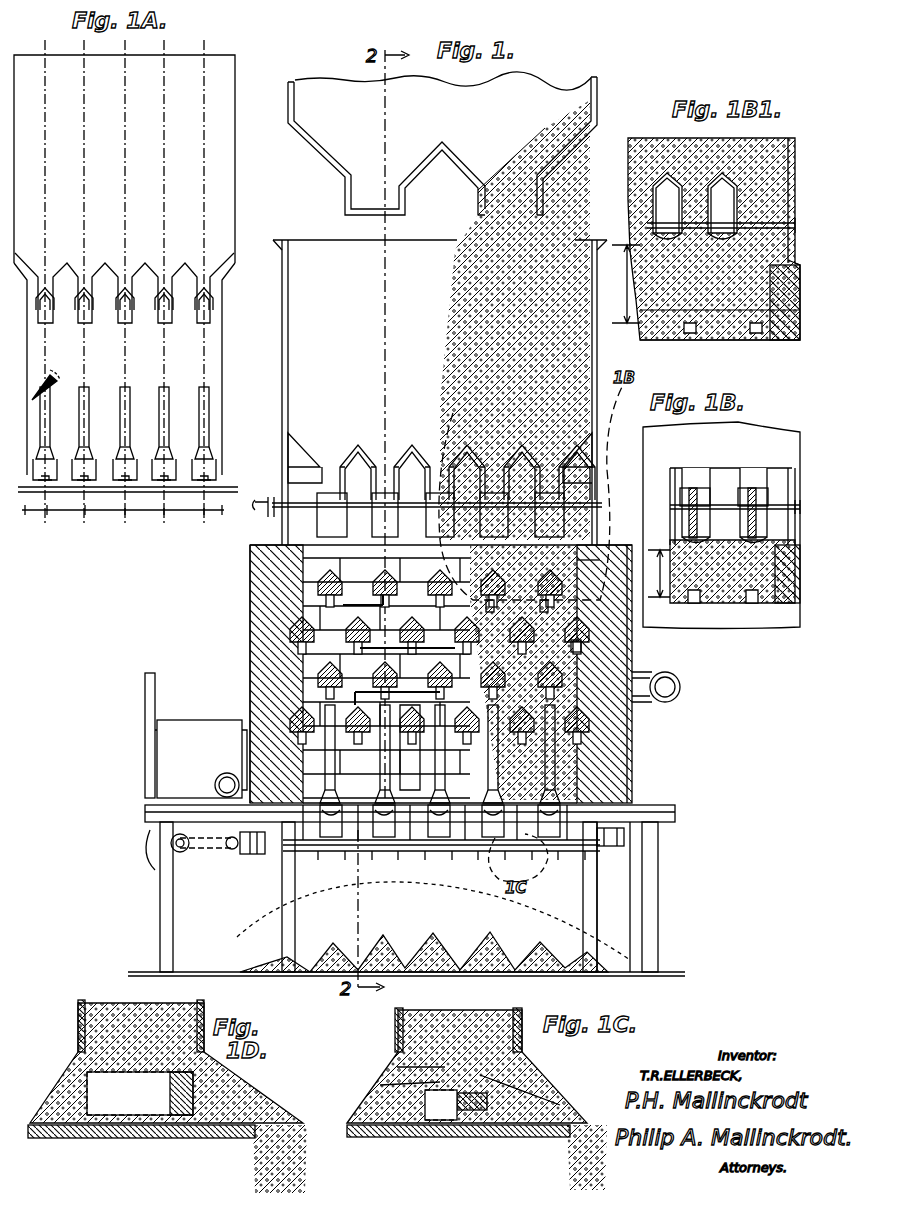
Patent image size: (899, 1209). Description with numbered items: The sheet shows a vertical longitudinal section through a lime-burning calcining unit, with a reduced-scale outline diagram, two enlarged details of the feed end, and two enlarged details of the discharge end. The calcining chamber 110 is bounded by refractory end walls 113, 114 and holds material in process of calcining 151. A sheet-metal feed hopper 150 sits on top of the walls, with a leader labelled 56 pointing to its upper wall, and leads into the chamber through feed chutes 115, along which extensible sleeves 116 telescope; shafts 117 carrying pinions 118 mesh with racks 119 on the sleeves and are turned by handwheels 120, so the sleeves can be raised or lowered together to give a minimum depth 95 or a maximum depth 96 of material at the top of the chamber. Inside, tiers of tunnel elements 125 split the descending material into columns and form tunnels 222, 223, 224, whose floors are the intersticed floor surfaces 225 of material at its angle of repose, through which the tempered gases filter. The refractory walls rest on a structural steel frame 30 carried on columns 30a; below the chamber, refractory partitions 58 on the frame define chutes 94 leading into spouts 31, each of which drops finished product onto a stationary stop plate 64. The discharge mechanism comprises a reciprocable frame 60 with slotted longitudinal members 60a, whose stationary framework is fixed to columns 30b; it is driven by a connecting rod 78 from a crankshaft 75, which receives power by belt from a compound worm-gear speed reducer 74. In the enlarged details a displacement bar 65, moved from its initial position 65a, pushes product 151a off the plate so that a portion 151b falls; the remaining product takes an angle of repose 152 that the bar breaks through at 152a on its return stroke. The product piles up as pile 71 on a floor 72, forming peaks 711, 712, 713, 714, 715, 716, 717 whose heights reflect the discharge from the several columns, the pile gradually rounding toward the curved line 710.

In FIG. 1, the structural steel frame 30 is at (628, 812).
In FIG. 1, the columns 30a is at (660, 878).
In FIG. 1, the columns 30b is at (433, 921).
In FIG. 1A, the spouts 31 is at (124, 469).
In FIG. 1, the spouts 31 is at (440, 821).
In FIG. 1D, the spouts 31 is at (78, 1022).
In FIG. 1C, the spouts 31 is at (396, 1025).
In FIG. 1, the feed hopper 56 is at (597, 105).
In FIG. 1A, the refractory partitions 58 is at (126, 417).
In FIG. 1, the refractory partitions 58 is at (337, 770).
In FIG. 1, the reciprocable frame 60 is at (612, 846).
In FIG. 1, the slotted longitudinal members 60a is at (600, 862).
In FIG. 1A, the stop plates 64 is at (100, 493).
In FIG. 1, the stop plates 64 is at (355, 858).
In FIG. 1D, the stop plates 64 is at (152, 1139).
In FIG. 1C, the stop plates 64 is at (525, 1137).
In FIG. 1A, the displacement bar 65 is at (112, 484).
In FIG. 1D, the displacement bar 65 is at (140, 1093).
In FIG. 1C, the displacement bar 65 is at (470, 1137).
In FIG. 1C, the initial position of displacement bar 65a is at (440, 1137).
In FIG. 1, the pile 71 is at (465, 970).
In FIG. 1, the floor 72 is at (196, 976).
In FIG. 1, the compound worm-gear speed reducer 74 is at (188, 735).
In FIG. 1, the crankshaft 75 is at (172, 845).
In FIG. 1, the connecting rod 78 is at (230, 850).
In FIG. 1, the chutes 94 is at (411, 747).
In FIG. 1B, the minimum depth 95 is at (652, 573).
In FIG. 1B1, the maximum depth 96 is at (619, 284).
In FIG. 1A, the calcining chamber 110 is at (222, 352).
In FIG. 1, the calcining chamber 110 is at (386, 675).
In FIG. 1, the refractory end wall 113 is at (600, 652).
In FIG. 1, the refractory end wall 114 is at (303, 574).
In FIG. 1A, the feed chutes 115 is at (121, 233).
In FIG. 1, the feed chutes 115 is at (372, 484).
In FIG. 1B1, the feed chutes 115 is at (721, 206).
In FIG. 1B, the feed chutes 115 is at (742, 476).
In FIG. 1, the extensible sleeves 116 is at (440, 515).
In FIG. 1B, the extensible sleeves 116 is at (758, 519).
In FIG. 1, the shafts 117 is at (298, 505).
In FIG. 1B, the shafts 117 is at (735, 499).
In FIG. 1B, the pinions 118 is at (700, 493).
In FIG. 1B, the racks 119 is at (700, 518).
In FIG. 1, the handwheels 120 is at (266, 518).
In FIG. 1A, the tunnel elements 125 is at (84, 295).
In FIG. 1, the tunnel elements 125 is at (318, 580).
In FIG. 1A, the feed hopper 150 is at (233, 140).
In FIG. 1, the feed hopper 150 is at (572, 240).
In FIG. 1B1, the feed hopper 150 is at (714, 239).
In FIG. 1B, the feed hopper 150 is at (692, 436).
In FIG. 1, the material in process of calcining 151 is at (632, 672).
In FIG. 1C, the product 151a is at (397, 1066).
In FIG. 1C, the falling portion of product 151b is at (598, 1178).
In FIG. 1C, the angle of repose 152 is at (530, 1082).
In FIG. 1C, the broken angle of repose 152a is at (380, 1085).
In FIG. 1, the tunnel 222 is at (397, 694).
In FIG. 1, the tunnel 223 is at (412, 648).
In FIG. 1, the tunnel 224 is at (363, 604).
In FIG. 1, the intersticed floor surfaces 225 is at (643, 626).
In FIG. 1B1, the intersticed floor surfaces 225 is at (755, 334).
In FIG. 1B, the intersticed floor surfaces 225 is at (694, 613).
In FIG. 1, the curved line 710 is at (372, 888).
In FIG. 1, the peak 711 is at (383, 938).
In FIG. 1, the peak 712 is at (433, 936).
In FIG. 1, the peak 713 is at (507, 929).
In FIG. 1, the peak 714 is at (333, 952).
In FIG. 1, the peak 715 is at (559, 933).
In FIG. 1, the peak 716 is at (272, 968).
In FIG. 1, the peak 717 is at (600, 962).